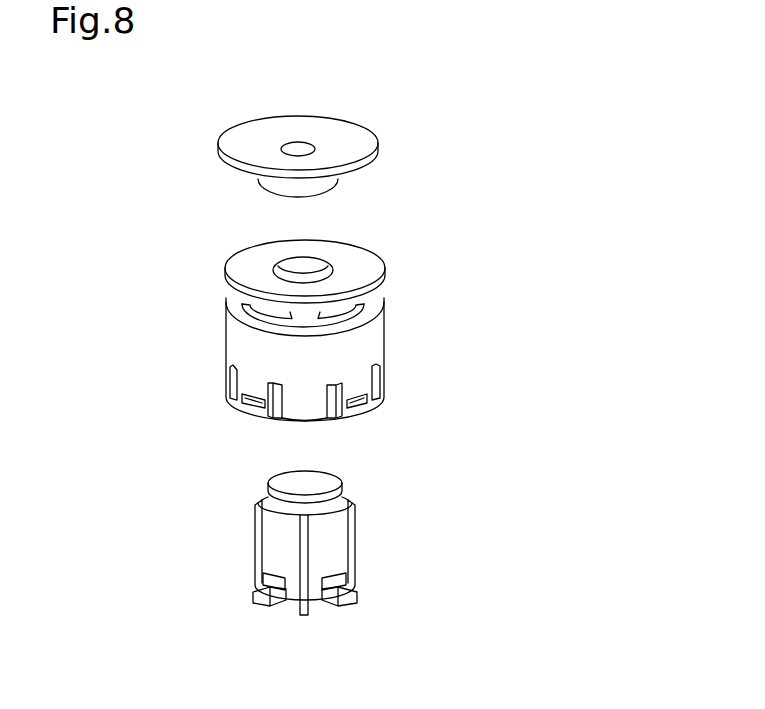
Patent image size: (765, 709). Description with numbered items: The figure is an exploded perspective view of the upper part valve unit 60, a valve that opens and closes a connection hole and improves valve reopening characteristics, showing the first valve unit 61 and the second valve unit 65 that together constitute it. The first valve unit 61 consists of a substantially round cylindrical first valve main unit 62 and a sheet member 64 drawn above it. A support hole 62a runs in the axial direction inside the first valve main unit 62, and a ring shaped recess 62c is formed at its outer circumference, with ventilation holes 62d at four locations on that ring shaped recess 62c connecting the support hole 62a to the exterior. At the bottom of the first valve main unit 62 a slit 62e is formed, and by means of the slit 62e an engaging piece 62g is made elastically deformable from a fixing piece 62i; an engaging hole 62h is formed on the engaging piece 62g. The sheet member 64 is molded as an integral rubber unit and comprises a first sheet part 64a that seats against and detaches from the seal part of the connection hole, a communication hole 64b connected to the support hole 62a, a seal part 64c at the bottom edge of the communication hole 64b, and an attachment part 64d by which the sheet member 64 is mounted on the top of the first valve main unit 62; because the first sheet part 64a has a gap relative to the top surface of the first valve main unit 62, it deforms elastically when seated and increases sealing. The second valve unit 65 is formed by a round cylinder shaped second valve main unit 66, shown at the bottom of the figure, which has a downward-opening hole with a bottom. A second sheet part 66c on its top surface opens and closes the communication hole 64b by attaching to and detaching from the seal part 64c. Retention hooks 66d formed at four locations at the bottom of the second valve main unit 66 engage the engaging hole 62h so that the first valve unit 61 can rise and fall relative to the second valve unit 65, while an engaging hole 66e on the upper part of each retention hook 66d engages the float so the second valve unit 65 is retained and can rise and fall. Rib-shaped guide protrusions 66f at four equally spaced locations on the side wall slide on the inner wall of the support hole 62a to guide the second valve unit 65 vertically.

The upper part valve unit 60 is at (582, 237).
The first valve unit 61 is at (512, 147).
The first valve main unit 62 is at (386, 328).
The support hole 62a is at (300, 268).
The ring shaped recess 62c is at (237, 310).
The ventilation holes 62d is at (258, 322).
The slit 62e is at (375, 401).
The engaging piece 62g is at (362, 386).
The engaging hole 62h is at (368, 408).
The fixing piece 62i is at (343, 422).
The sheet member 64 is at (380, 152).
The first sheet part 64a is at (352, 134).
The communication hole 64b is at (296, 146).
The seal part 64c is at (290, 189).
The attachment part 64d is at (265, 187).
The second valve unit 65 is at (357, 531).
The second valve main unit 66 is at (255, 541).
The second sheet part 66c is at (325, 487).
The retention hooks 66d is at (340, 597).
The engaging hole 66e is at (335, 606).
The guide protrusion 66f is at (352, 558).